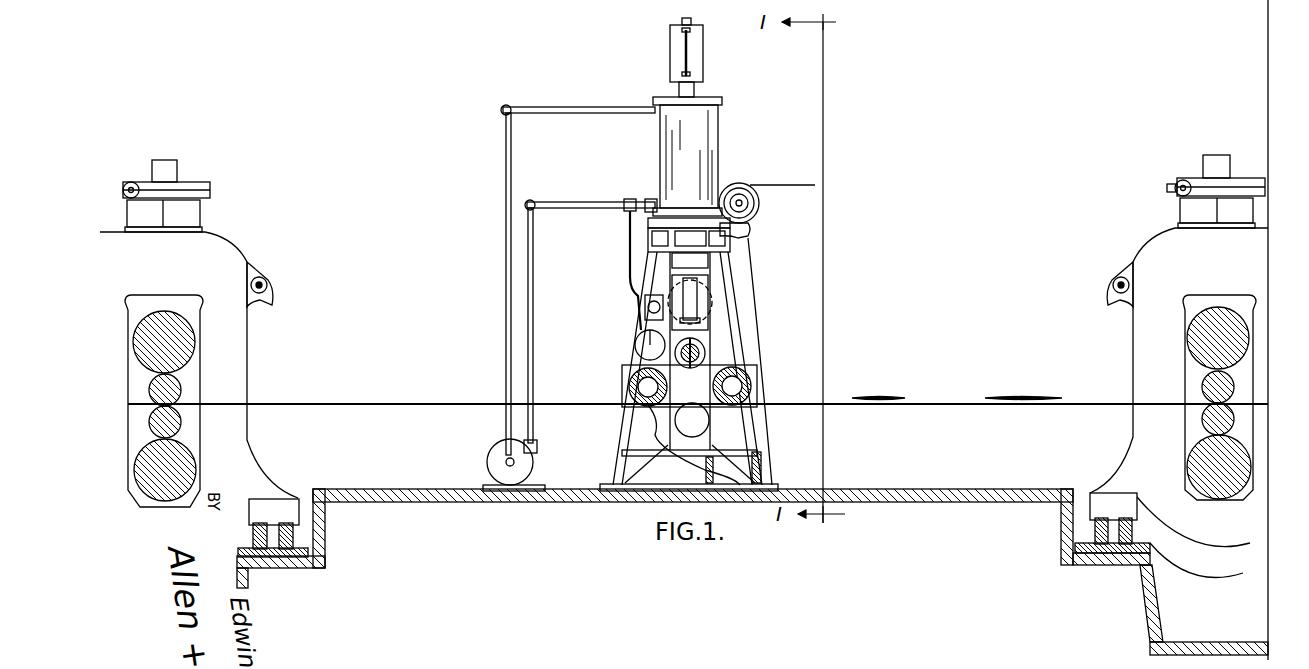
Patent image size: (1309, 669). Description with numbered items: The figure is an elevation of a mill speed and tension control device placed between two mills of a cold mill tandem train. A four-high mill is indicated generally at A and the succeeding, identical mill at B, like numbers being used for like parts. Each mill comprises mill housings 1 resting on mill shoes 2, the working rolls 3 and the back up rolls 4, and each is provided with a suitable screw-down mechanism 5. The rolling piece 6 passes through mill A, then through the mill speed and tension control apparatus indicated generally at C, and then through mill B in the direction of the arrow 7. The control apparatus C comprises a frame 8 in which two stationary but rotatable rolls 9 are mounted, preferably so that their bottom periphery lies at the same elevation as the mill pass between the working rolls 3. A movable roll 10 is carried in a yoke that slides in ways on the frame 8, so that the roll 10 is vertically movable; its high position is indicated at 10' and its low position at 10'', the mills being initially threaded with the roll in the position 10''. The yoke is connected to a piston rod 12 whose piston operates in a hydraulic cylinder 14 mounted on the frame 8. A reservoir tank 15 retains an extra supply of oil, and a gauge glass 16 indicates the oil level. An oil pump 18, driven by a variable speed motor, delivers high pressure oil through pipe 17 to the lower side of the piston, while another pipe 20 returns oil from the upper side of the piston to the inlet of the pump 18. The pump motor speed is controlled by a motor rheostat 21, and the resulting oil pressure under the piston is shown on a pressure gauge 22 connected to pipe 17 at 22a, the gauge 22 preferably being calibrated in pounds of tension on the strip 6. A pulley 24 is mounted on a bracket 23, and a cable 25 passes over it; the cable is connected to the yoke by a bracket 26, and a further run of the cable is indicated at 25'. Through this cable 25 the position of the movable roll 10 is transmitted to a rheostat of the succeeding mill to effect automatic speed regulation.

The mill housing 1 is at (690, 401).
The mill shoe 2 is at (296, 558).
The working roll 3 is at (183, 392).
The back up roll 4 is at (185, 316).
The screw-down mechanism 5 is at (176, 185).
The rolling piece 6 is at (336, 403).
The arrow 7 is at (962, 398).
The frame 8 is at (645, 262).
The stationary roll 9 is at (632, 397).
The movable roll 10 is at (730, 348).
The high position of movable roll 10' is at (723, 292).
The low position of movable roll 10'' is at (719, 431).
The piston rod 12 is at (696, 300).
The hydraulic cylinder 14 is at (716, 162).
The reservoir tank 15 is at (704, 68).
The gauge glass 16 is at (692, 50).
The pipe 17 is at (572, 208).
The oil pump 18 is at (516, 462).
The pipe 20 is at (573, 113).
The motor rheostat 21 is at (642, 308).
The pressure gauge 22 is at (640, 354).
The gauge connection 22a is at (615, 270).
The bracket 23 is at (750, 230).
The pulley 24 is at (760, 205).
The cable 25 is at (782, 172).
The cable 25' is at (766, 361).
The bracket connection 26 is at (716, 354).
The four-high mill A is at (199, 313).
The succeeding mill B is at (1179, 353).
The mill speed and tension control apparatus C is at (705, 138).